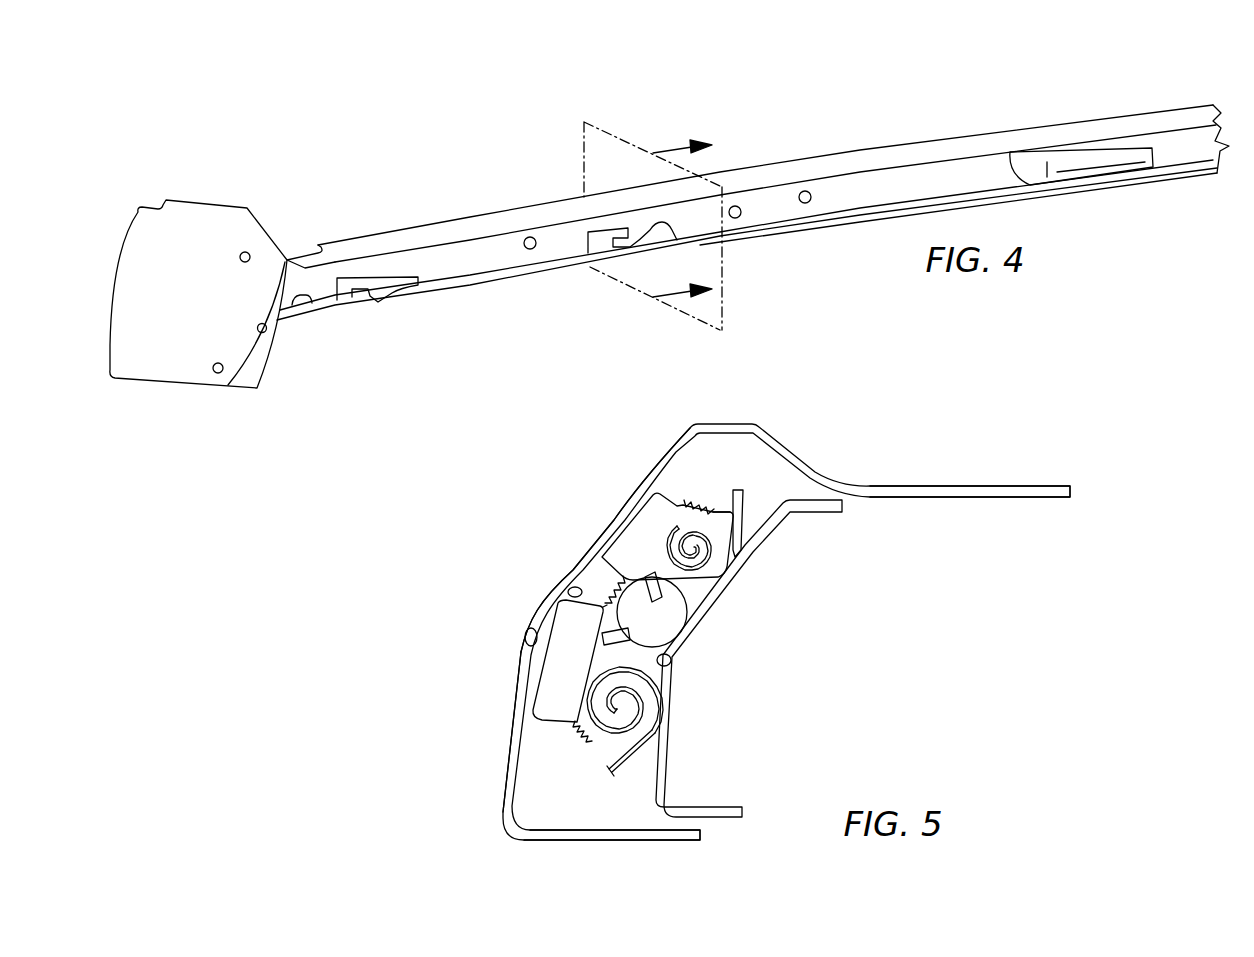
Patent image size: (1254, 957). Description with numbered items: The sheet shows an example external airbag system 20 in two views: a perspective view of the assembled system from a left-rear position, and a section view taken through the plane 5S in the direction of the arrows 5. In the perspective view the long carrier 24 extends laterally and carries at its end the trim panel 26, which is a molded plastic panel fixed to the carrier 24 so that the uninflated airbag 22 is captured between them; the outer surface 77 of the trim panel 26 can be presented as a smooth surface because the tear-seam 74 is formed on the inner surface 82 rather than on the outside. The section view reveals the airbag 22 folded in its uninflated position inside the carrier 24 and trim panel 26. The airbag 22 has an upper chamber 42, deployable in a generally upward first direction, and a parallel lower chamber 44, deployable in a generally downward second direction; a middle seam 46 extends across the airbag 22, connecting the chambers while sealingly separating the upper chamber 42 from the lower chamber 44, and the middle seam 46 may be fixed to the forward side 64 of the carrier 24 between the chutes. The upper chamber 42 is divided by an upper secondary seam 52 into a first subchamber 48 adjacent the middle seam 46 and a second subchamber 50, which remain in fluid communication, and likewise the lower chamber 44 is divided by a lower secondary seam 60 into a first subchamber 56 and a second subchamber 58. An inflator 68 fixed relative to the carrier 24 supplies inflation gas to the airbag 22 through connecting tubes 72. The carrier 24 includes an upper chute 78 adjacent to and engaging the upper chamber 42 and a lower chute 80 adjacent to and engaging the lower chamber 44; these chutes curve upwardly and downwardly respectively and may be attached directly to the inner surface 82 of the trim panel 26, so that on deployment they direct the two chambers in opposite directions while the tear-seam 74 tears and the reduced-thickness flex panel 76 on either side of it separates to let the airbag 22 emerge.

In FIG. 4, the external airbag system 20 is at (928, 95).
In FIG. 5, the external airbag system 20 is at (432, 545).
In FIG. 5, the airbag 22 is at (603, 565).
In FIG. 4, the carrier 24 is at (467, 260).
In FIG. 5, the carrier 24 is at (668, 782).
In FIG. 4, the trim panel 26 is at (247, 208).
In FIG. 5, the trim panel 26 is at (925, 485).
In FIG. 5, the upper chamber 42 is at (627, 518).
In FIG. 5, the lower chamber 44 is at (573, 728).
In FIG. 5, the middle seam 46 is at (606, 582).
In FIG. 5, the first subchamber of the upper chamber 48 is at (637, 510).
In FIG. 5, the second subchamber of the upper chamber 50 is at (727, 510).
In FIG. 5, the upper secondary seam 52 is at (690, 503).
In FIG. 5, the first subchamber of the lower chamber 56 is at (545, 660).
In FIG. 5, the second subchamber of the lower chamber 58 is at (609, 774).
In FIG. 5, the lower secondary seam 60 is at (590, 745).
In FIG. 5, the forward side of the carrier 64 is at (662, 662).
In FIG. 5, the inflator 68 is at (687, 602).
In FIG. 5, the connecting tubes 72 is at (665, 588).
In FIG. 5, the tear-seam 74 is at (600, 600).
In FIG. 5, the flex panel 76 is at (600, 540).
In FIG. 5, the outer surface of the trim panel 77 is at (653, 463).
In FIG. 5, the upper chute 78 is at (743, 490).
In FIG. 5, the lower chute 80 is at (627, 775).
In FIG. 5, the inner surface of the trim panel 82 is at (566, 596).
In FIG. 4, the arrows 5 is at (667, 147).
In FIG. 4, the plane 5S is at (592, 150).